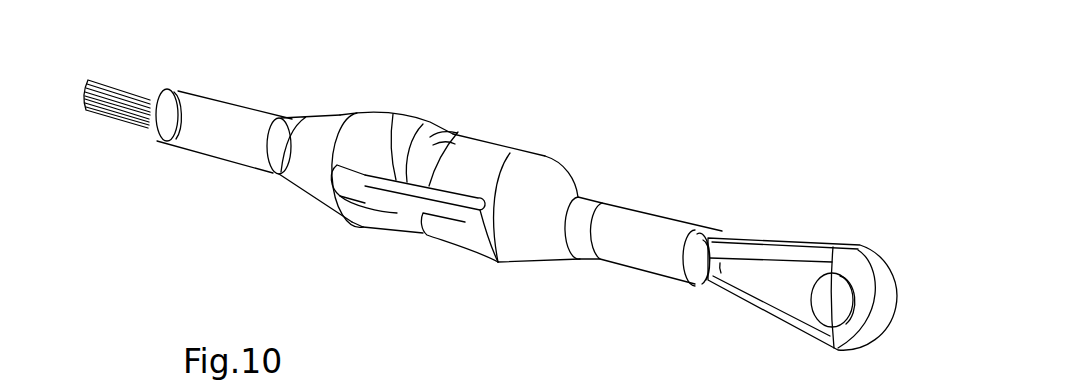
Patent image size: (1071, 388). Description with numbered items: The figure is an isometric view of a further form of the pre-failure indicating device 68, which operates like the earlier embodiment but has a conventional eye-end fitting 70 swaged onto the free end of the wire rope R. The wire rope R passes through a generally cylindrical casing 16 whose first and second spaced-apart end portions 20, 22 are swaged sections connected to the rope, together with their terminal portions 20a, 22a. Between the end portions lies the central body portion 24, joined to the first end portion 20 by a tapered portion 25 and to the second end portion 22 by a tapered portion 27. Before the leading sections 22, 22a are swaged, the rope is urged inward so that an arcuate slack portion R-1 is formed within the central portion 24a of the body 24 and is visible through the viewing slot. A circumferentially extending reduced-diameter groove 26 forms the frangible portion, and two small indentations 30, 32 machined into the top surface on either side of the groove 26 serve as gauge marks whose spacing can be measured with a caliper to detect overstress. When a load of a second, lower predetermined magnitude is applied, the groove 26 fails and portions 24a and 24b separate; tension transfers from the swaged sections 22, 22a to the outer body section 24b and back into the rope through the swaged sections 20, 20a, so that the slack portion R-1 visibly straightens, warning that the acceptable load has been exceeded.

The casing 16 is at (446, 265).
The first end portion 20 is at (643, 220).
The terminal portion 20a is at (693, 267).
The second end portion 22 is at (242, 110).
The terminal portion 22a is at (170, 98).
The central body portion 24 is at (367, 213).
The central portion 24a is at (377, 133).
The outer body section 24b is at (462, 240).
The tapered portion 25 is at (318, 127).
The groove 26 is at (433, 143).
The tapered portion 27 is at (557, 177).
The indentation 30 is at (405, 123).
The indentation 32 is at (480, 147).
The pre-failure indicating device 68 is at (391, 62).
The eye-end fitting 70 is at (758, 250).
The wire rope R is at (103, 98).
The slack portion R-1 is at (396, 186).